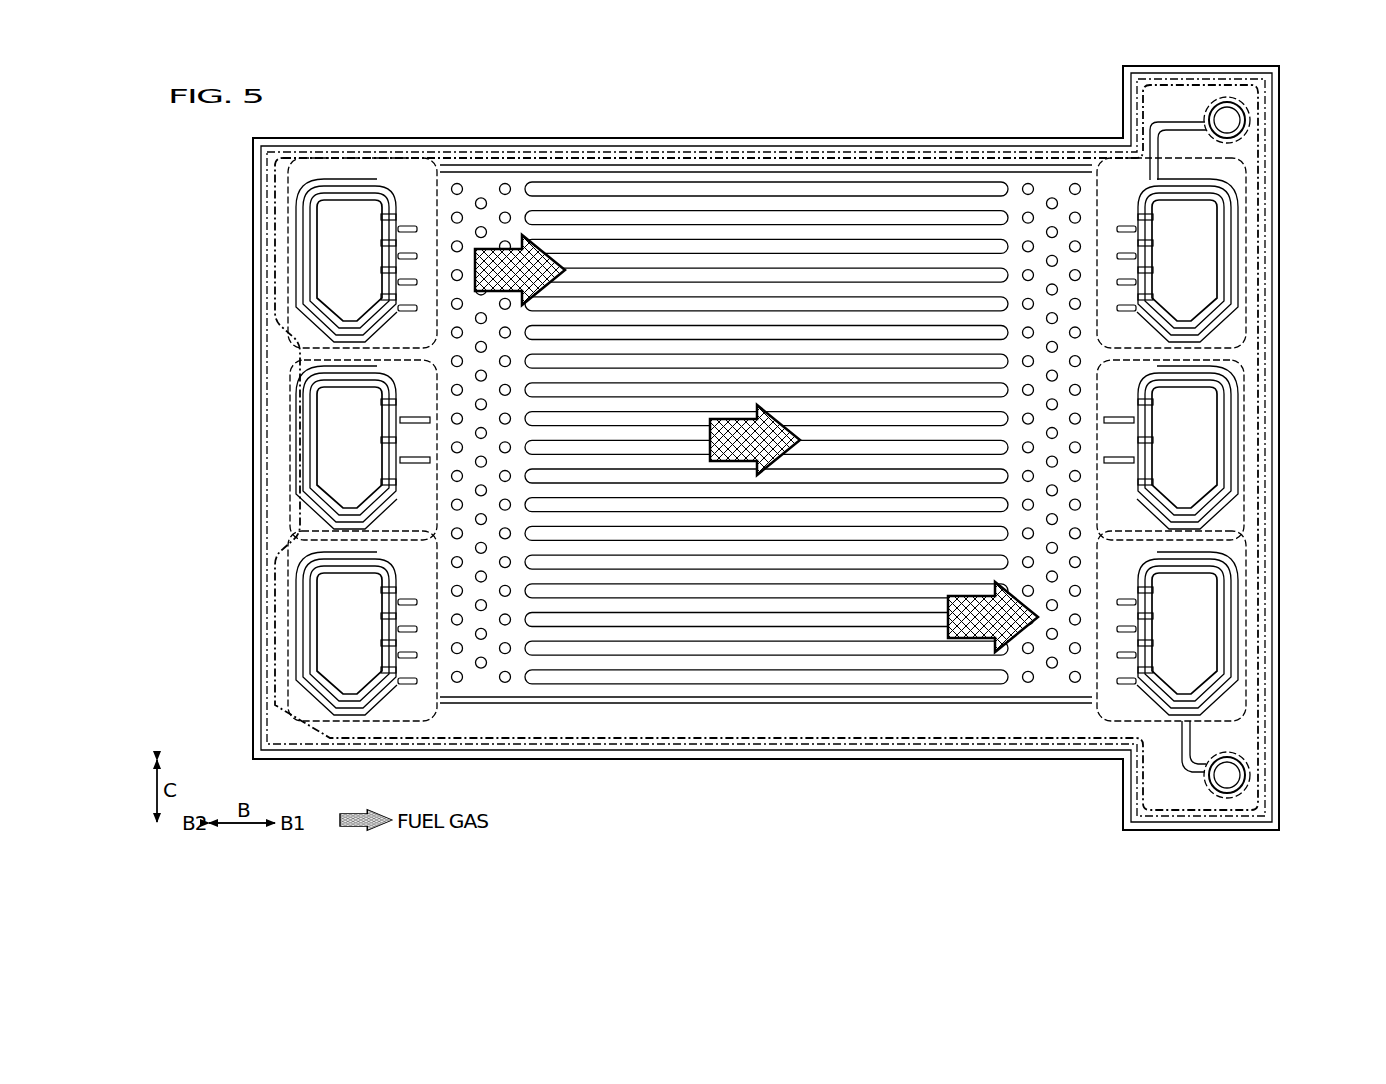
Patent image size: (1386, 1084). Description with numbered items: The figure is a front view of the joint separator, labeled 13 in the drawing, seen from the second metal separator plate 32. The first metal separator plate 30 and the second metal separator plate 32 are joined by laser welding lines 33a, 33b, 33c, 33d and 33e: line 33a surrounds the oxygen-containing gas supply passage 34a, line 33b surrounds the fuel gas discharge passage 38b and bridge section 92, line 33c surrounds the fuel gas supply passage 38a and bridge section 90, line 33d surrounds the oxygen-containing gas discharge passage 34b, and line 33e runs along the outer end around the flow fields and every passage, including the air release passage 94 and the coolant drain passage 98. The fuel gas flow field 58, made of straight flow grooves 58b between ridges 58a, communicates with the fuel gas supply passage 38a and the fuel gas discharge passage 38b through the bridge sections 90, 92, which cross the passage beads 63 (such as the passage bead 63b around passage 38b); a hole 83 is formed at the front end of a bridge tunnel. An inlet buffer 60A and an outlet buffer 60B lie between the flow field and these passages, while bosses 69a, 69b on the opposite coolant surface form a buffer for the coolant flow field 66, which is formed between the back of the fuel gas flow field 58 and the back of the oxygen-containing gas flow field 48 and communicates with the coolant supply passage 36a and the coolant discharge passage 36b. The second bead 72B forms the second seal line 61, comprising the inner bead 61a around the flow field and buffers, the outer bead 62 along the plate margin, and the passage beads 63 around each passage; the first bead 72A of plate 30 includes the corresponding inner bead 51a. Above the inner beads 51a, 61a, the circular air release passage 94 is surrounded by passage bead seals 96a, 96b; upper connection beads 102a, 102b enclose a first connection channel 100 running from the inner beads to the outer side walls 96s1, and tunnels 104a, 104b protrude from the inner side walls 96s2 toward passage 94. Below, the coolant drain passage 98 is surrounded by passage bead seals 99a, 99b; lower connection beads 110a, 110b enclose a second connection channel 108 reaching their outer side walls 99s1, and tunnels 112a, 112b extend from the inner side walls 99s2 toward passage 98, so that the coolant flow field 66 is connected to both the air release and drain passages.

The joint separator 13 is at (338, 100).
The first metal separator plate 30 is at (740, 180).
The second metal separator plate 32 is at (705, 180).
The laser welding line 33a is at (1242, 241).
The laser welding line 33b is at (1242, 653).
The laser welding line 33c is at (265, 317).
The laser welding line 33d is at (282, 561).
The laser welding line 33e is at (788, 162).
The oxygen-containing gas supply passage 34a is at (1197, 227).
The oxygen-containing gas discharge passage 34b is at (332, 598).
The coolant supply passage 36a is at (1205, 427).
The coolant discharge passage 36b is at (334, 421).
The fuel gas supply passage 38a is at (332, 218).
The fuel gas discharge passage 38b is at (1199, 650).
The oxygen-containing gas flow field 48 is at (865, 206).
The inner bead 51a is at (940, 700).
The fuel gas flow field 58 is at (662, 104).
The ridges 58a is at (578, 216).
The straight flow grooves 58b is at (640, 206).
The inlet buffer 60A is at (505, 590).
The outlet buffer 60B is at (1075, 533).
The second seal line 61 is at (838, 746).
The inner bead 61a is at (875, 700).
The outer bead 62 is at (785, 740).
The passage beads 63 is at (302, 236).
The passage bead 63b is at (1238, 558).
The coolant flow field 66 is at (912, 206).
The bosses 69a is at (481, 197).
The bosses 69b is at (1050, 197).
The first bead 72A is at (682, 752).
The second bead 72B is at (737, 745).
The hole 83 is at (395, 298).
The bridge section 90 is at (408, 213).
The bridge section 92 is at (1105, 672).
The air release passage 94 is at (1247, 118).
The passage bead seal 96a is at (1248, 100).
The passage bead seal 96b is at (1247, 110).
The outer side walls 96s1 is at (1227, 147).
The inner side walls 96s2 is at (1233, 132).
The coolant drain passage 98 is at (1248, 777).
The passage bead seal 99a is at (1245, 797).
The passage bead seal 99b is at (1238, 790).
The outer side walls 99s1 is at (1245, 755).
The inner side walls 99s2 is at (1232, 773).
The first connection channel 100 is at (1180, 120).
The upper connection bead 102a is at (1177, 122).
The upper connection bead 102b is at (1157, 128).
The tunnel 104a is at (1230, 127).
The tunnel 104b is at (1212, 118).
The second connection channel 108 is at (1190, 786).
The lower connection bead 110a is at (1185, 771).
The lower connection bead 110b is at (1195, 768).
The tunnel 112a is at (1250, 771).
The tunnel 112b is at (1205, 792).